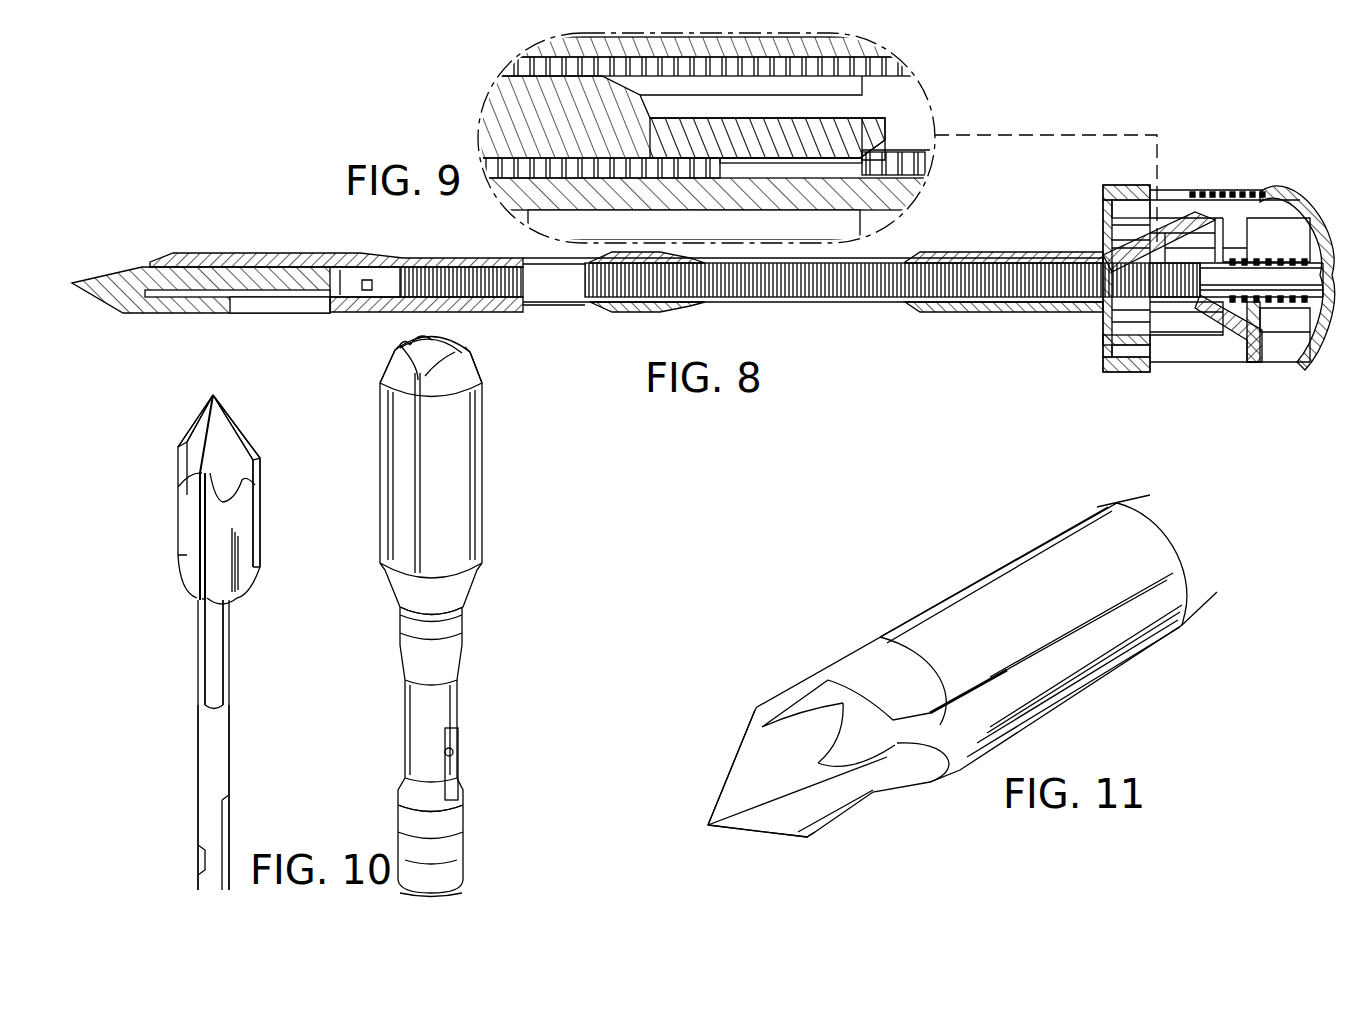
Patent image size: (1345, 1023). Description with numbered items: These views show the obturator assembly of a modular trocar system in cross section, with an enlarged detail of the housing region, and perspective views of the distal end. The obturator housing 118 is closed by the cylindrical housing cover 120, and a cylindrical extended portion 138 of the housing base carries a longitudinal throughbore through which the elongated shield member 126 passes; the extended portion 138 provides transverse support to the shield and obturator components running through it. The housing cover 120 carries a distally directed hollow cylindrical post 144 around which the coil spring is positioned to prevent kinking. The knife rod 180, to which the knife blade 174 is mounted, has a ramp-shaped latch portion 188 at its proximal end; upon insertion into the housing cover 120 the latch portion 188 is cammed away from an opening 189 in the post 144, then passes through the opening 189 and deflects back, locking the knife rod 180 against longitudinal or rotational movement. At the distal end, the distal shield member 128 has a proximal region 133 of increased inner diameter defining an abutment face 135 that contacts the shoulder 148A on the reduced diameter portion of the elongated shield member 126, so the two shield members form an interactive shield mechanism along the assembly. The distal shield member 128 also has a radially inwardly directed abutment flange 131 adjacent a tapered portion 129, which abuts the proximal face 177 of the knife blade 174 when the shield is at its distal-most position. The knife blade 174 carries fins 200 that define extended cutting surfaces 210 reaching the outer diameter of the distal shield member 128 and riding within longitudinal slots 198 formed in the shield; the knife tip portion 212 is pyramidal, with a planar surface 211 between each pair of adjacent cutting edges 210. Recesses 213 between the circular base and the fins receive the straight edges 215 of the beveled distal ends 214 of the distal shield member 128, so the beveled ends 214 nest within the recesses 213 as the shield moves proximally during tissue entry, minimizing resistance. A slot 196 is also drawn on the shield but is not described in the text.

In FIG. 8, the obturator housing 118 is at (1126, 185).
In FIG. 8, the cylindrical housing cover 120 is at (1215, 192).
In FIG. 9, the elongated shield member 126 is at (780, 46).
In FIG. 8, the elongated shield member 126 is at (827, 307).
In FIG. 8, the distal shield member 128 is at (262, 253).
In FIG. 10, the distal shield member 128 is at (498, 645).
In FIG. 11, the distal shield member 128 is at (970, 630).
In FIG. 10, the tapered portion 129 is at (437, 596).
In FIG. 8, the abutment flange 131 is at (302, 262).
In FIG. 10, the proximal region 133 is at (440, 853).
In FIG. 10, the abutment face 135 is at (440, 890).
In FIG. 8, the cylindrical extended portion 138 is at (985, 252).
In FIG. 9, the hollow cylindrical post 144 is at (885, 72).
In FIG. 8, the shoulder 148A is at (672, 310).
In FIG. 8, the knife blade 174 is at (167, 298).
In FIG. 10, the knife blade 174 is at (165, 636).
In FIG. 10, the proximal face 177 is at (233, 593).
In FIG. 9, the knife rod 180 is at (510, 92).
In FIG. 10, the knife rod 180 is at (210, 752).
In FIG. 9, the latch portion 188 is at (875, 148).
In FIG. 9, the opening 189 is at (905, 155).
In FIG. 10, the slot 196 is at (458, 755).
In FIG. 10, the longitudinal slots 198 is at (425, 505).
In FIG. 11, the longitudinal slots 198 is at (1075, 600).
In FIG. 10, the fins 200 is at (250, 563).
In FIG. 11, the fins 200 is at (943, 620).
In FIG. 10, the extended cutting surfaces 210 is at (202, 410).
In FIG. 11, the extended cutting surfaces 210 is at (740, 747).
In FIG. 10, the planar surface 211 is at (188, 480).
In FIG. 11, the knife tip portion 212 is at (743, 783).
In FIG. 10, the recesses 213 is at (258, 470).
In FIG. 10, the beveled distal ends 214 is at (400, 345).
In FIG. 11, the beveled distal ends 214 is at (880, 673).
In FIG. 10, the straight edges 215 is at (462, 352).